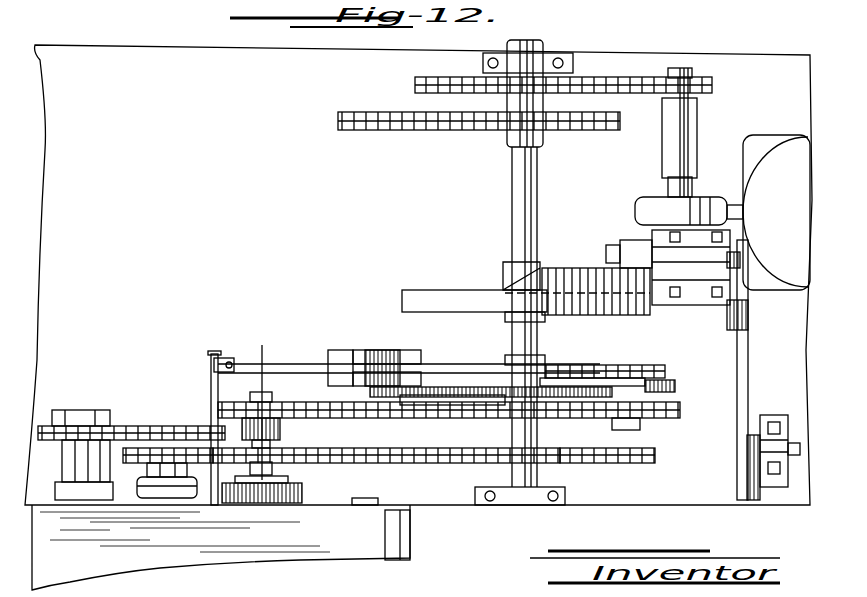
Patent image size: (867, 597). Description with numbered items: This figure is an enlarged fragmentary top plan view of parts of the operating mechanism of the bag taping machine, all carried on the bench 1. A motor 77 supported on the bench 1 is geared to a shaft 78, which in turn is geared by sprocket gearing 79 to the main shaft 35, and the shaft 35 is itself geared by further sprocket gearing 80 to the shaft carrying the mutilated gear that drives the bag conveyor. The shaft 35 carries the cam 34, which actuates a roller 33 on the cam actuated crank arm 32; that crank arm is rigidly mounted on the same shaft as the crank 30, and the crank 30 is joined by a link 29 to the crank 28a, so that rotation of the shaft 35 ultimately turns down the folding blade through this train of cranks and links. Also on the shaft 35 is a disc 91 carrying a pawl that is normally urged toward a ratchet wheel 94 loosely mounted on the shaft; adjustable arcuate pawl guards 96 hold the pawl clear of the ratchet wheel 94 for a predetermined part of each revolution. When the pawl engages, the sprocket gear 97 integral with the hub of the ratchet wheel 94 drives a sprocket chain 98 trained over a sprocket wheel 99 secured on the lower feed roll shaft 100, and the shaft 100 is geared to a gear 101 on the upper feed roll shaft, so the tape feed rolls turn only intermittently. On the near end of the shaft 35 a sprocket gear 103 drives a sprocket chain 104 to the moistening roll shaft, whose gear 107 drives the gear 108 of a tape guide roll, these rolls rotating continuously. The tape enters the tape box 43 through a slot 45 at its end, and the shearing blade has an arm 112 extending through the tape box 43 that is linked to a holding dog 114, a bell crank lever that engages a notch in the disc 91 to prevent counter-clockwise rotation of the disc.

The bench 1 is at (740, 70).
The crank 28a is at (745, 488).
The link 29 is at (745, 360).
The crank 30 is at (732, 290).
The cam actuated crank arm 32 is at (655, 290).
The roller 33 is at (633, 250).
The cam 34 is at (482, 302).
The shaft 35 is at (518, 238).
The tape box 43 is at (318, 545).
The slot 45 is at (393, 542).
The motor 77 is at (782, 165).
The shaft 78 is at (682, 137).
The sprocket gearing 79 is at (613, 82).
The sprocket gearing 80 is at (479, 100).
The disc 91 is at (583, 373).
The ratchet wheel 94 is at (447, 388).
The arcuate pawl guard 96 is at (673, 380).
The sprocket gear 97 is at (650, 420).
The sprocket chain 98 is at (472, 408).
The sprocket wheel 99 is at (220, 405).
The lower feed roll shaft 100 is at (257, 392).
The gear 101 is at (302, 492).
The sprocket gear 103 is at (143, 442).
The sprocket chain 104 is at (418, 457).
The gear 107 is at (168, 432).
The gear 108 is at (40, 425).
The arm 112 is at (212, 395).
The holding dog 114 is at (287, 365).